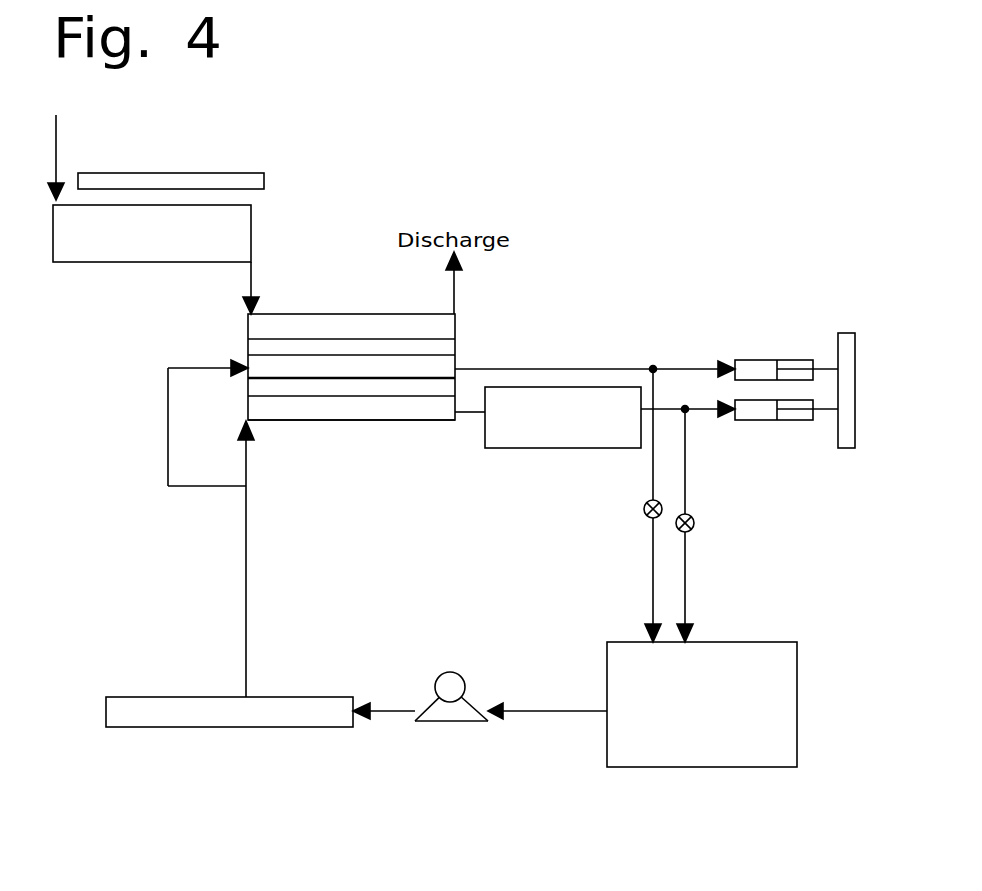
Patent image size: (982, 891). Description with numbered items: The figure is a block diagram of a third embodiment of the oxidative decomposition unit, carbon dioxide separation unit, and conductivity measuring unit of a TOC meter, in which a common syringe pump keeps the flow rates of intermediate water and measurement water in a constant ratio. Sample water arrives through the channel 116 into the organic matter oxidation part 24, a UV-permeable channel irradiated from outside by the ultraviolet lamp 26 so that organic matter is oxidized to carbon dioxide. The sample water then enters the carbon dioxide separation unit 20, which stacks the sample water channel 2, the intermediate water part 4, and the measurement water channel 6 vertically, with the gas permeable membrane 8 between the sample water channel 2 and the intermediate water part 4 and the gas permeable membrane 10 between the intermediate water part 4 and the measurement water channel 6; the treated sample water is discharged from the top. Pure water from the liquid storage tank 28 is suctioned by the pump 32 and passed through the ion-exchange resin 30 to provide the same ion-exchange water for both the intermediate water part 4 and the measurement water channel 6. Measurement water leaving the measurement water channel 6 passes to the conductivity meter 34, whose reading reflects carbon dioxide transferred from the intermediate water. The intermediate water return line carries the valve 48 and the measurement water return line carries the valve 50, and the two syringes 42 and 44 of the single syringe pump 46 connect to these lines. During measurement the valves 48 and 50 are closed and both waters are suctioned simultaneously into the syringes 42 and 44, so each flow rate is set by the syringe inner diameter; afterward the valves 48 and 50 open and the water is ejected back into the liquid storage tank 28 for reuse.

The channel 116 is at (57, 142).
The ultraviolet lamp 26 is at (254, 180).
The organic matter oxidation part 24 is at (107, 262).
The carbon dioxide separation unit 20 is at (352, 365).
The sample water channel 2 is at (447, 329).
The gas permeable membrane 8 is at (255, 348).
The intermediate water part 4 is at (443, 367).
The gas permeable membrane 10 is at (257, 390).
The measurement water channel 6 is at (438, 410).
The conductivity meter 34 is at (538, 448).
The syringe 42 is at (755, 360).
The syringe 44 is at (758, 420).
The syringe pump 46 is at (850, 340).
The valve 48 is at (642, 512).
The valve 50 is at (694, 525).
The liquid storage tank 28 is at (745, 767).
The pump 32 is at (465, 721).
The ion-exchange resin 30 is at (243, 727).